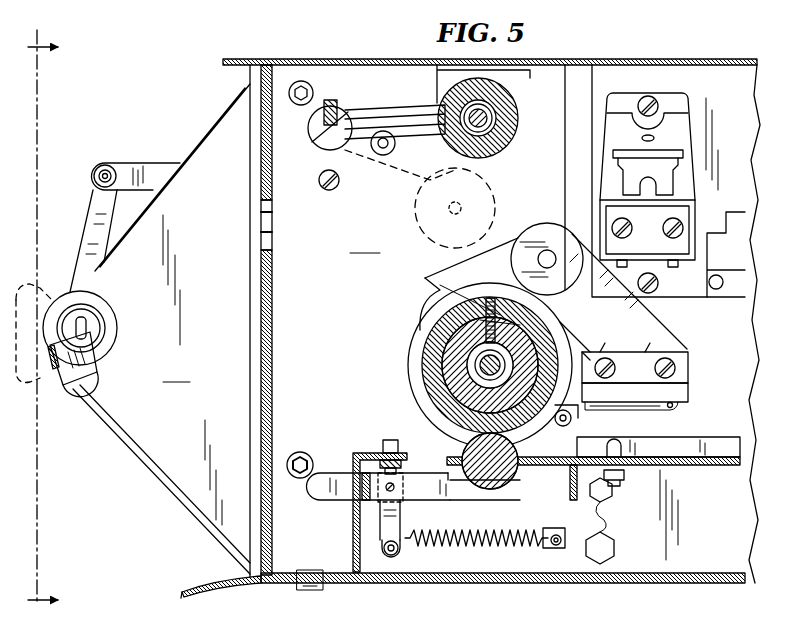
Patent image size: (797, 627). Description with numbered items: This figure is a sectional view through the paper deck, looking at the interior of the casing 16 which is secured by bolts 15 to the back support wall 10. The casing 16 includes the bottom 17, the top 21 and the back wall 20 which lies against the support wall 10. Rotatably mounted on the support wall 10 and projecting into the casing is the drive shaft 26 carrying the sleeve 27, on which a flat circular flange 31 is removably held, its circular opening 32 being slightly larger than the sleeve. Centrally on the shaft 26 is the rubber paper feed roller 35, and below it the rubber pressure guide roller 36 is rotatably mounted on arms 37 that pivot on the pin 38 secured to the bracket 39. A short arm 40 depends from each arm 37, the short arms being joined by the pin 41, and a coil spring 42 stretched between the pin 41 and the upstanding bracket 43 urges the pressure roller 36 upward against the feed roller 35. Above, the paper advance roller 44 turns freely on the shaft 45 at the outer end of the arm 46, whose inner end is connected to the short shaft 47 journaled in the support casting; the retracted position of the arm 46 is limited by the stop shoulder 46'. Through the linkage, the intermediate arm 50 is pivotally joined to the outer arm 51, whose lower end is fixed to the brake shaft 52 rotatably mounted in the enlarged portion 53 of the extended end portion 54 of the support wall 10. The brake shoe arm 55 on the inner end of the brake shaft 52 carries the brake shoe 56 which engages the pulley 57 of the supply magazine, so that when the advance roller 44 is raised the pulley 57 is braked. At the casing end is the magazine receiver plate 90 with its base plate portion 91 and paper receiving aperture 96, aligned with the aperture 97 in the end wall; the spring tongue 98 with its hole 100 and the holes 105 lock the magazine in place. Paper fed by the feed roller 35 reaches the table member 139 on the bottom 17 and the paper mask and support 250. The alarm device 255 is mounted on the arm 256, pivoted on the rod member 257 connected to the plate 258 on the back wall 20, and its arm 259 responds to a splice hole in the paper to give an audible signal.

The support wall 10 is at (155, 472).
The bolt 15 is at (312, 92).
The casing 16 is at (618, 62).
The bottom 17 is at (688, 584).
The back wall 20 is at (204, 322).
The top 21 is at (690, 62).
The drive shaft 26 is at (457, 378).
The sleeve 27 is at (460, 386).
The flat circular flange 31 is at (410, 330).
The circular opening 32 is at (440, 402).
The paper feed roller 35 is at (428, 360).
The pressure guide roller 36 is at (507, 478).
The arm 37 is at (485, 500).
The pin 38 is at (396, 490).
The bracket 39 is at (402, 462).
The short arm 40 is at (380, 533).
The pin 41 is at (388, 556).
The coil spring 42 is at (455, 548).
The upstanding bracket 43 is at (554, 533).
The paper advance roller 44 is at (515, 130).
The shaft 45 is at (492, 116).
The arm 46 is at (400, 137).
The stop shoulder 46' is at (463, 83).
The short shaft 47 is at (318, 142).
The intermediate arm 50 is at (150, 171).
The outer arm 51 is at (90, 222).
The brake shaft 52 is at (94, 323).
The enlarged portion 53 is at (105, 302).
The extended end portion 54 is at (192, 370).
The brake shoe arm 55 is at (105, 335).
The brake shoe 56 is at (51, 368).
The pulley 57 is at (42, 292).
The magazine receiver plate 90 is at (250, 236).
The base plate portion 91 is at (262, 342).
The paper receiving aperture 96 is at (265, 233).
The aperture 97 is at (268, 214).
The spring tongue 98 is at (182, 590).
The hole 100 is at (234, 585).
The hole 105 is at (254, 59).
The table member 139 is at (674, 460).
The paper mask and support 250 is at (728, 445).
The alarm device 255 is at (690, 378).
The arm 256 is at (655, 332).
The rod member 257 is at (546, 250).
The plate 258 is at (478, 276).
The alarm arm 259 is at (572, 413).